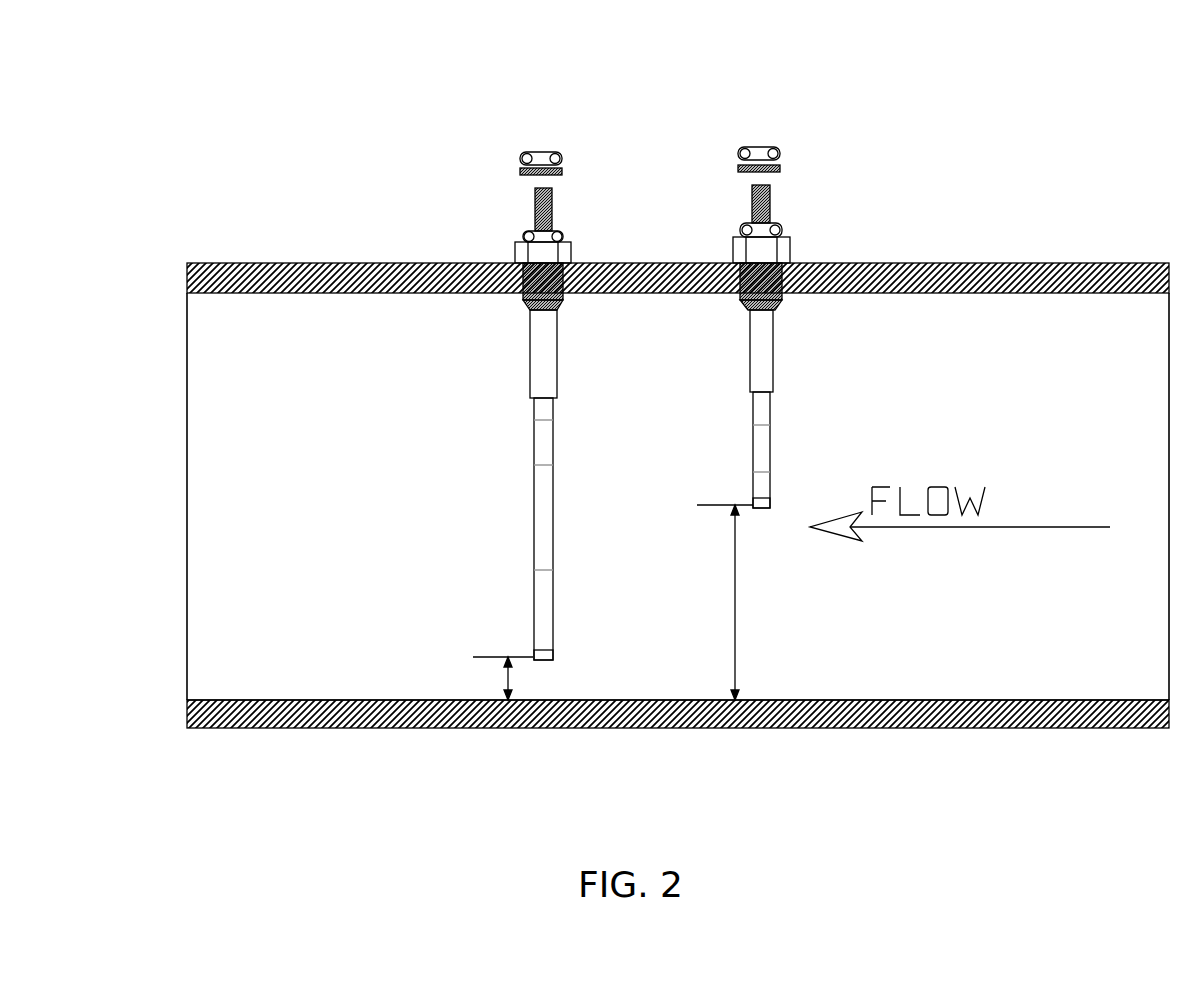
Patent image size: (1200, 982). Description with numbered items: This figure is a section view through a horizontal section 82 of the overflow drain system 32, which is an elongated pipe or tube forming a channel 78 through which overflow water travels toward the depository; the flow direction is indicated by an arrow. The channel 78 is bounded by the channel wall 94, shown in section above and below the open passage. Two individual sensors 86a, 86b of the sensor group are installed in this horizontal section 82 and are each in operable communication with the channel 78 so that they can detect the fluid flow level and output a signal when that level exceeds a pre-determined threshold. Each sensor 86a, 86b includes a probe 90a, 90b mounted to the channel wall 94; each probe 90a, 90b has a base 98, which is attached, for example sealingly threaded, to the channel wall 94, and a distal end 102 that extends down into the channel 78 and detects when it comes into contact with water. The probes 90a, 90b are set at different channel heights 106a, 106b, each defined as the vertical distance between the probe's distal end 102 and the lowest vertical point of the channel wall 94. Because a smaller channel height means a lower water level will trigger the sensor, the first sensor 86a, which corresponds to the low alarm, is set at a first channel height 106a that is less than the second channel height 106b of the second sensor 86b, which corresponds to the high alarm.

The overflow drain system 32 is at (678, 611).
The channel 78 is at (312, 433).
The horizontal section 82 is at (840, 728).
The first sensor 86a is at (543, 233).
The second sensor 86b is at (758, 232).
The first probe 90a is at (543, 513).
The second probe 90b is at (773, 408).
The channel wall 94 is at (438, 728).
The base 98 is at (537, 230).
The distal end 102 is at (542, 650).
The first channel height 106a is at (505, 677).
The second channel height 106b is at (735, 617).